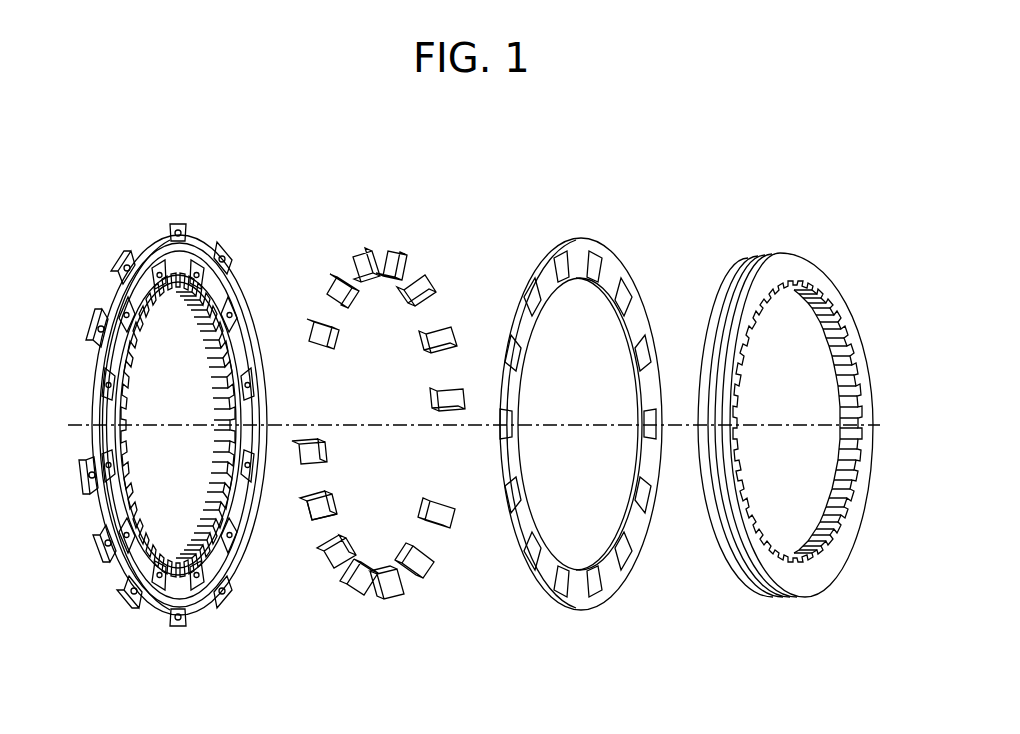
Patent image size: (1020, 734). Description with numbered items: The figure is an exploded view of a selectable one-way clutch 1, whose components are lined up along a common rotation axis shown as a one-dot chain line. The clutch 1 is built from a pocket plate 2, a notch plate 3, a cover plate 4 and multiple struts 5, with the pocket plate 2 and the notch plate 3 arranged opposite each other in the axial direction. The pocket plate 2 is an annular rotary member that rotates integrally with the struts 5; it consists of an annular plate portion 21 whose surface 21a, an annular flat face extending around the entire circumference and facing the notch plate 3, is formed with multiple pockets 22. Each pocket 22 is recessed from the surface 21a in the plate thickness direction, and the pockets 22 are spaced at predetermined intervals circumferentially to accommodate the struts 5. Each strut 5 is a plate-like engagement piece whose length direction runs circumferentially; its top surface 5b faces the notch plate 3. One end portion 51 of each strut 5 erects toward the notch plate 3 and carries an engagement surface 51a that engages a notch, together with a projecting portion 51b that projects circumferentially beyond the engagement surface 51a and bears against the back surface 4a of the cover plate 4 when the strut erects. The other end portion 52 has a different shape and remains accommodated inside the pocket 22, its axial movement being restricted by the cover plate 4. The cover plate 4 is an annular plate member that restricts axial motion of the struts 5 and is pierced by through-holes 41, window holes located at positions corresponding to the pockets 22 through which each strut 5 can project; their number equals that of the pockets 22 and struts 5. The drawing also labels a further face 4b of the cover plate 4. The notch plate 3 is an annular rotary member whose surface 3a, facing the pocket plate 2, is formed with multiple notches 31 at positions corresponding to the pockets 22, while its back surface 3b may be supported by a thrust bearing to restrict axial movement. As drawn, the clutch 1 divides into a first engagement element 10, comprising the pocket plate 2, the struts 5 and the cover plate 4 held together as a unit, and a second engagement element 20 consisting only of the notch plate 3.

The selectable one-way clutch 1 is at (725, 154).
The first engagement element 10 is at (665, 667).
The second engagement element 20 is at (872, 667).
The pocket plate 2 is at (178, 233).
The plate portion 21 is at (110, 302).
The surface 21a is at (208, 590).
The pockets 22 is at (232, 279).
The struts 5 is at (387, 253).
The one end portion 51 is at (390, 462).
The engagement surface 51a is at (322, 504).
The projecting portion 51b is at (318, 492).
The other end portion 52 is at (322, 530).
The top surface 5b is at (425, 570).
The cover plate 4 is at (580, 237).
The through-holes 41 is at (645, 334).
The back surface 4a is at (525, 542).
The notch plate second face 4b is at (651, 482).
The notch plate 3 is at (781, 252).
The notches 31 is at (701, 372).
The surface 3a is at (713, 518).
The back surface 3b is at (795, 582).